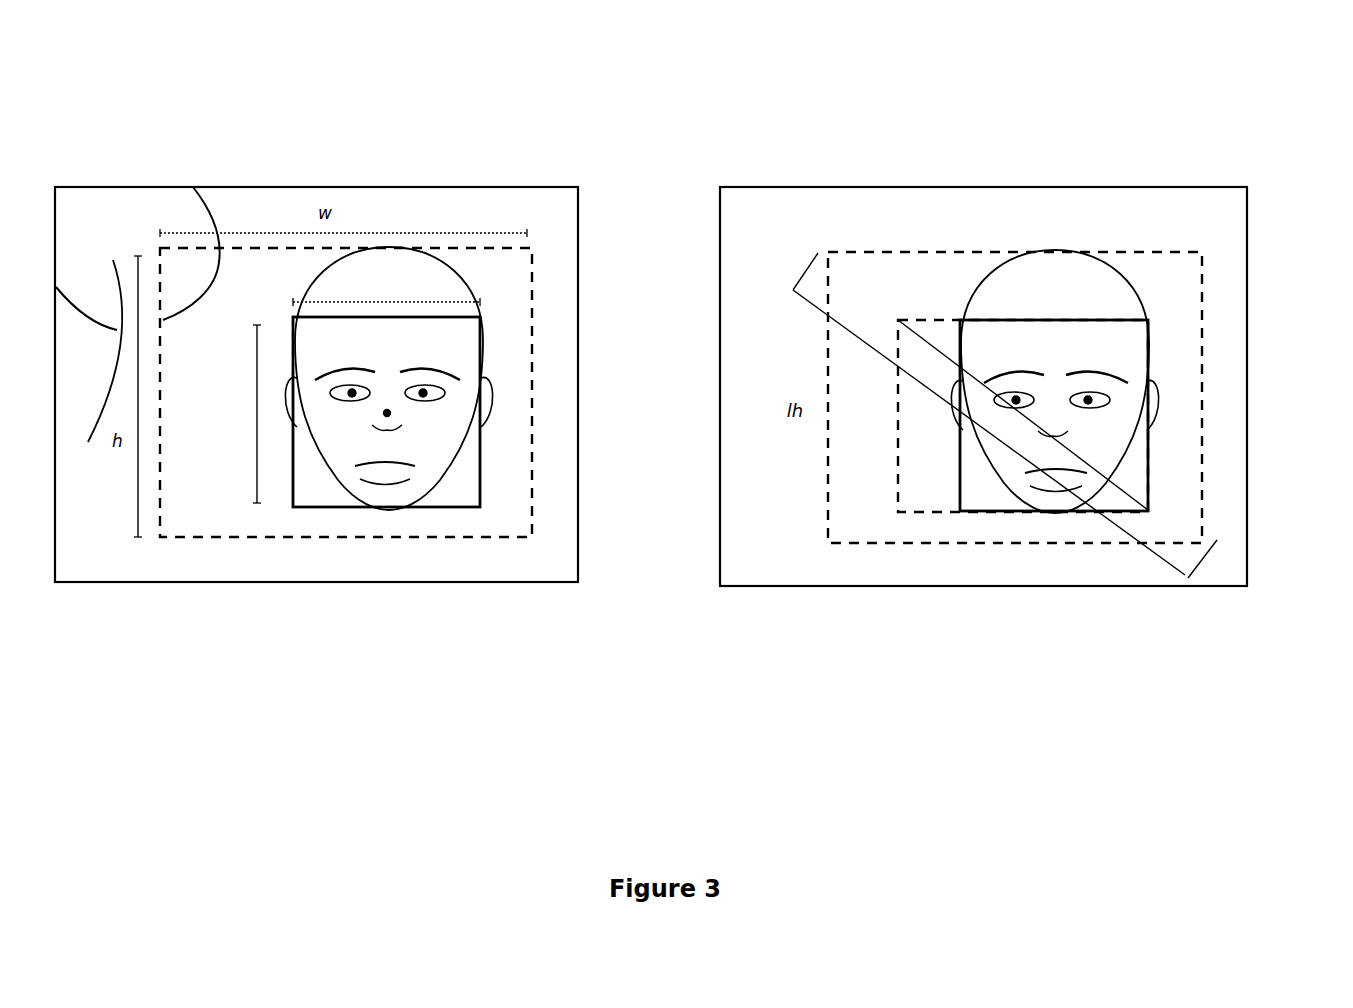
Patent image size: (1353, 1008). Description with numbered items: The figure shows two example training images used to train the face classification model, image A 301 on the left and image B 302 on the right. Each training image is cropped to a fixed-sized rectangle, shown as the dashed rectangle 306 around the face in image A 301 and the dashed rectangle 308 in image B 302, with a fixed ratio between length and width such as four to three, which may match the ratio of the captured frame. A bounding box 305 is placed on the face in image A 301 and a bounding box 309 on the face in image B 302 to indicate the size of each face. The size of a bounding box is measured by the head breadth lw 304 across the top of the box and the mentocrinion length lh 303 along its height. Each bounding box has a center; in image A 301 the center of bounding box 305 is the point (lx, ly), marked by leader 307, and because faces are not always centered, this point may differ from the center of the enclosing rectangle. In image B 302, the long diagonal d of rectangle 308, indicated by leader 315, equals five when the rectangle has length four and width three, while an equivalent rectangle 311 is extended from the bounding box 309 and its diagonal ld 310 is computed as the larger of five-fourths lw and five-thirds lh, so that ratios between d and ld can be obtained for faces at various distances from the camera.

The image A 301 is at (299, 694).
The image B 302 is at (977, 694).
The mentocrinion length lh 303 is at (257, 325).
The head breadth lw 304 is at (335, 302).
The bounding box 305 is at (412, 315).
The fixed-sized rectangle 306 is at (467, 245).
The facial landmark point (lx, ly) 307 is at (427, 427).
The fixed-sized rectangle 308 is at (859, 252).
The bounding box 309 is at (1080, 318).
The diagonal ld 310 is at (1123, 487).
The equivalent rectangle 311 is at (917, 317).
The diagonal distance line d 315 is at (1143, 542).